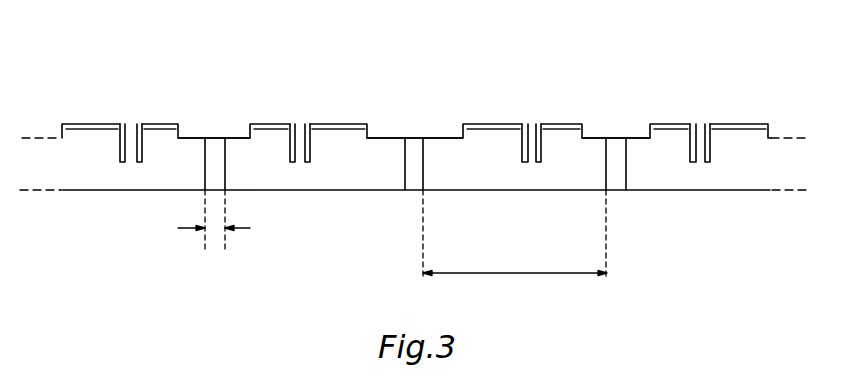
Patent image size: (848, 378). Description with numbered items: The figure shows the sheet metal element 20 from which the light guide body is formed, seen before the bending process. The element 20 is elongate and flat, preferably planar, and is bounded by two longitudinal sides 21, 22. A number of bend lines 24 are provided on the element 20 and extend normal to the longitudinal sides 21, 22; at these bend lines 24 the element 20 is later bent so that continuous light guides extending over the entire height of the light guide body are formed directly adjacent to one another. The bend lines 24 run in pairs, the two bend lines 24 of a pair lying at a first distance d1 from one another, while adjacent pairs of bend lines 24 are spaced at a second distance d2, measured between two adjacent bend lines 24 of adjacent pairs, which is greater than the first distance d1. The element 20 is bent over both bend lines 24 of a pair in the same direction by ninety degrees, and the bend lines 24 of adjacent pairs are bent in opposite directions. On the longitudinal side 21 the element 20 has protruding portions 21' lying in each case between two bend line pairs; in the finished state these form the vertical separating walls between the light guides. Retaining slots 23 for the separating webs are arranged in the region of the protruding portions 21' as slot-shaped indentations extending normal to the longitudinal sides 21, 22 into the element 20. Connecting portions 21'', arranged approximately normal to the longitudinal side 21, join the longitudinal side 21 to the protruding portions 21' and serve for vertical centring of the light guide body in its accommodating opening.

The element 20 is at (358, 160).
The longitudinal side 21 is at (411, 88).
The protruding portions 21' is at (416, 79).
The connecting portions 21'' is at (414, 74).
The longitudinal side 22 is at (78, 193).
The retaining slots 23 is at (141, 165).
The bend lines 24 is at (405, 180).
The first distance d1 is at (214, 242).
The second distance d2 is at (515, 287).